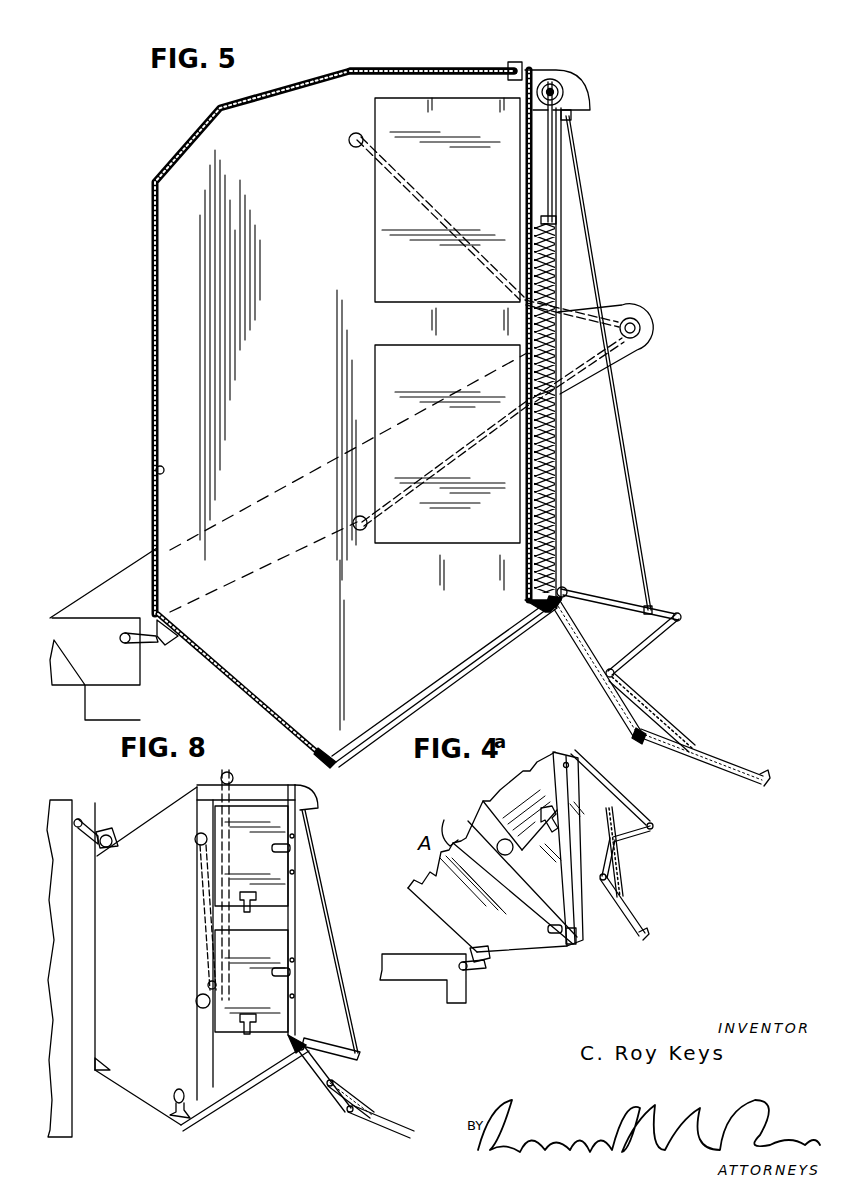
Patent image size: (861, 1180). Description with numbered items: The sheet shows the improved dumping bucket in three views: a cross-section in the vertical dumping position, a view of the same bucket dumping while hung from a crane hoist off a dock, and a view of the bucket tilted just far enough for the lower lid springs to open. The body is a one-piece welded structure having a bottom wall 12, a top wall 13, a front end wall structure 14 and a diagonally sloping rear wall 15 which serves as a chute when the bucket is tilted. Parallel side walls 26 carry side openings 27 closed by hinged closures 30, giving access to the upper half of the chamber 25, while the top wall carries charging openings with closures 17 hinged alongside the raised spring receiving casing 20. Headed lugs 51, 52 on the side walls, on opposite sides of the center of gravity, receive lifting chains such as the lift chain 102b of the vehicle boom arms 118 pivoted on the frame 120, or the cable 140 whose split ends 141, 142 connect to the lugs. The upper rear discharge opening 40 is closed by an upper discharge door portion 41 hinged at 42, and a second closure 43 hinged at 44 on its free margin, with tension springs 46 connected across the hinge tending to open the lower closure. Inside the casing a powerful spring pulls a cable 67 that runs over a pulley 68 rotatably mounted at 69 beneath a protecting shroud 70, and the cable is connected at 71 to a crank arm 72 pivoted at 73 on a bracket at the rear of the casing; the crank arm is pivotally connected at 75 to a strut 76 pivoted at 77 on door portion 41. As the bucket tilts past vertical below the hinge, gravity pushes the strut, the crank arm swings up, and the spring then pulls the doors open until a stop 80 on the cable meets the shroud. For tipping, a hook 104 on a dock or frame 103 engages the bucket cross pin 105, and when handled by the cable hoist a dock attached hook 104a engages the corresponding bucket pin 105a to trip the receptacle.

In FIG. 5, the bottom wall 12 is at (152, 336).
In FIG. 5, the top wall 13 is at (550, 194).
In FIG. 5, the front end wall structure 14 is at (310, 78).
In FIG. 5, the rear wall 15 is at (265, 702).
In FIG. 8, the closure 17 is at (298, 866).
In FIG. 4A, the closure 17 is at (496, 852).
In FIG. 5, the spring receiving casing 20 is at (560, 216).
In FIG. 5, the chamber 25 is at (156, 470).
In FIG. 5, the side wall 26 is at (197, 252).
In FIG. 5, the side opening 27 is at (375, 266).
In FIG. 5, the closure 30 is at (410, 290).
In FIG. 8, the closure 30 is at (290, 840).
In FIG. 5, the discharge opening 40 is at (430, 688).
In FIG. 5, the upper discharge door portion 41 is at (600, 680).
In FIG. 8, the upper discharge door portion 41 is at (322, 1090).
In FIG. 4A, the upper discharge door portion 41 is at (622, 840).
In FIG. 5, the hinge 42 is at (558, 606).
In FIG. 5, the second closure 43 is at (708, 770).
In FIG. 8, the second closure 43 is at (386, 1130).
In FIG. 4A, the second closure 43 is at (628, 912).
In FIG. 5, the hinge 44 is at (640, 742).
In FIG. 4A, the hinge 44 is at (606, 876).
In FIG. 5, the spring 46 is at (680, 735).
In FIG. 8, the spring 46 is at (350, 1096).
In FIG. 4A, the spring 46 is at (618, 862).
In FIG. 8, the headed lug 51 is at (196, 1003).
In FIG. 8, the headed lug 52 is at (194, 842).
In FIG. 5, the cable 67 is at (594, 270).
In FIG. 8, the cable 67 is at (330, 896).
In FIG. 5, the pulley 68 is at (566, 84).
In FIG. 5, the pulley mounting 69 is at (551, 86).
In FIG. 5, the protecting shield or shroud 70 is at (576, 104).
In FIG. 5, the cable connection 71 is at (656, 612).
In FIG. 5, the crank arm 72 is at (616, 580).
In FIG. 5, the pivot 73 is at (563, 588).
In FIG. 5, the pivotal connection 75 is at (683, 619).
In FIG. 5, the strut 76 is at (652, 650).
In FIG. 5, the pivot 77 is at (620, 678).
In FIG. 5, the stop 80 is at (572, 120).
In FIG. 5, the lift chain 102b is at (440, 460).
In FIG. 4A, the frame 103 is at (426, 974).
In FIG. 5, the hook 104 is at (166, 644).
In FIG. 4A, the hook 104 is at (484, 966).
In FIG. 8, the dock attached hook 104a is at (100, 814).
In FIG. 5, the cross pin 105 is at (190, 628).
In FIG. 4A, the cross pin 105 is at (478, 950).
In FIG. 8, the latch 105a is at (112, 838).
In FIG. 5, the lift arm or boom 118 is at (136, 578).
In FIG. 5, the frame 120 is at (80, 672).
In FIG. 8, the cable 140 is at (240, 782).
In FIG. 8, the split end 141 is at (210, 956).
In FIG. 8, the split end 142 is at (202, 893).